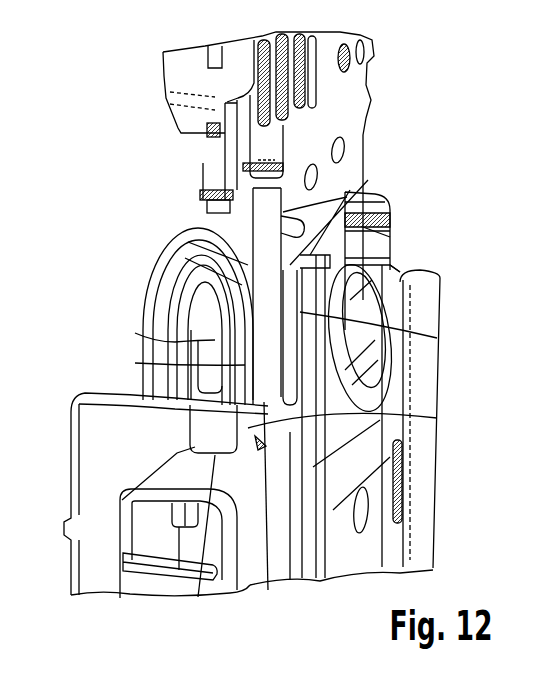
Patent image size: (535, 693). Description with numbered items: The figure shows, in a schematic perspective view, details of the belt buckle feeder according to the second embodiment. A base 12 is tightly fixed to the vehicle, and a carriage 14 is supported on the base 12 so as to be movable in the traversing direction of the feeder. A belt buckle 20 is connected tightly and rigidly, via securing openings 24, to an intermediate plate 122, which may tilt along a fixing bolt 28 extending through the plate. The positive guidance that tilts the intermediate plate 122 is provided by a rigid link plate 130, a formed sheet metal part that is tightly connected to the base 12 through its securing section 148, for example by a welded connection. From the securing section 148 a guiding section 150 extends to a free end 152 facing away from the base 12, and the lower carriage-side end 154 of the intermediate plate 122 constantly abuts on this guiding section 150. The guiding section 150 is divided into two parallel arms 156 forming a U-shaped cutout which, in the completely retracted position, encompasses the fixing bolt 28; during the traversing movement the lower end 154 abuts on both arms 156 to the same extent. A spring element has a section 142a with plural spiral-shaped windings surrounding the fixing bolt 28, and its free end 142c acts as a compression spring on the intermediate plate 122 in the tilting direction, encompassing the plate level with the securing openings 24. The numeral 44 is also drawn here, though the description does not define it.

The base 12 is at (116, 512).
The carriage 14 is at (74, 444).
The belt buckle 20 is at (172, 70).
The securing openings 24 is at (345, 150).
The fixing bolt 28 is at (152, 290).
The guide 44 is at (158, 314).
The intermediate plate 122 is at (350, 190).
The link plate 130 is at (268, 590).
The section of the spring element 142a is at (160, 340).
The free end of the spring element 142c is at (390, 233).
The securing section 148 is at (196, 590).
The guiding section 150 is at (424, 343).
The free end 152 is at (157, 266).
The lower carriage-side end 154 is at (408, 418).
The arms 156 is at (160, 362).